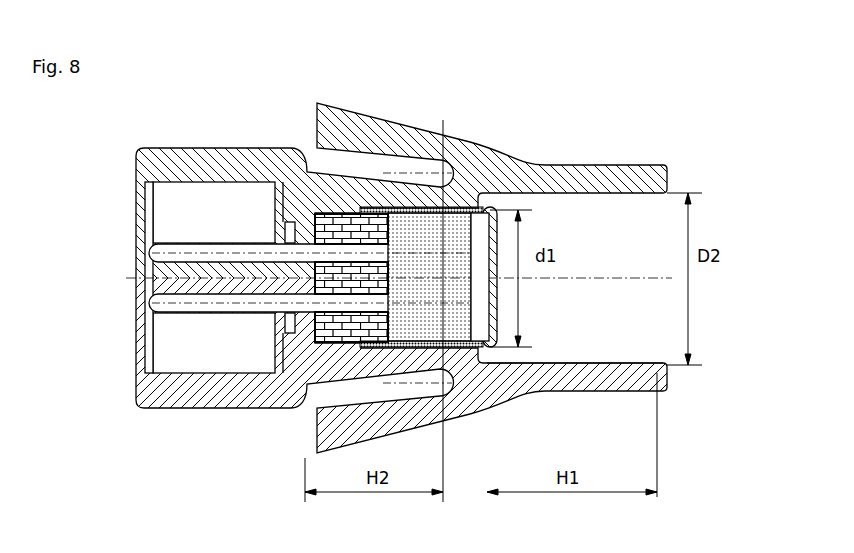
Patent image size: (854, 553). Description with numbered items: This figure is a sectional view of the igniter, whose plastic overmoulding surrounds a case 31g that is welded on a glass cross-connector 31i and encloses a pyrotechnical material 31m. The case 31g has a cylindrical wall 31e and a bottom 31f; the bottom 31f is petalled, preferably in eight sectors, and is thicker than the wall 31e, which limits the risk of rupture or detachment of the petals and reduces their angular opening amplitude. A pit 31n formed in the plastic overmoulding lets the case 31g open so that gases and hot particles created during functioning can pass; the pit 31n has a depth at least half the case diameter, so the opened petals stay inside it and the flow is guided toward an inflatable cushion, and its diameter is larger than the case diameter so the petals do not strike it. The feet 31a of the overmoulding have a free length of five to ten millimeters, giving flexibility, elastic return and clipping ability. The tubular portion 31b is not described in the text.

The feet 31a is at (325, 123).
The tubular portion 31b is at (583, 163).
The cylindrical wall 31e is at (413, 207).
The bottom 31f is at (487, 502).
The case 31g is at (567, 32).
The glass cross-connector 31i is at (333, 337).
The pyrotechnical material 31m is at (429, 277).
The pit 31n is at (548, 362).